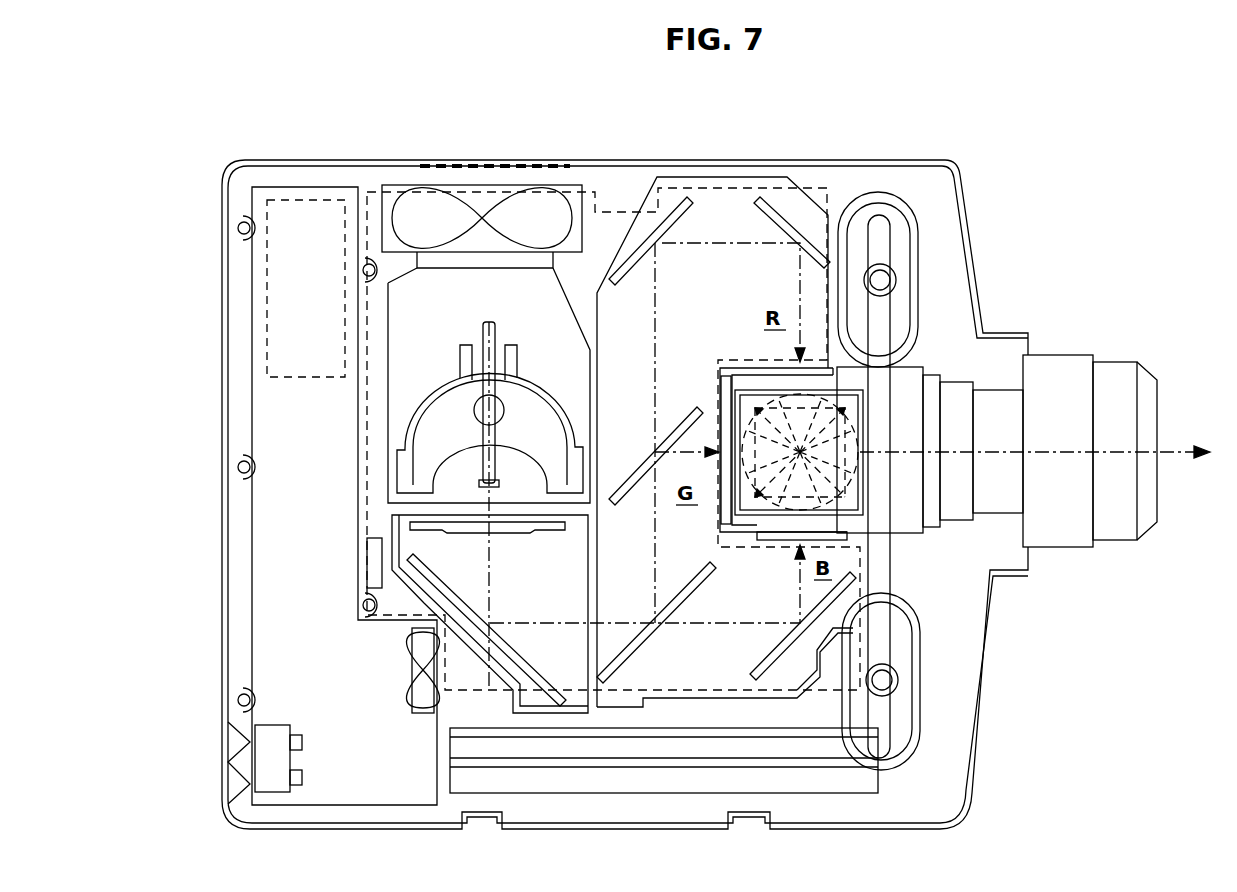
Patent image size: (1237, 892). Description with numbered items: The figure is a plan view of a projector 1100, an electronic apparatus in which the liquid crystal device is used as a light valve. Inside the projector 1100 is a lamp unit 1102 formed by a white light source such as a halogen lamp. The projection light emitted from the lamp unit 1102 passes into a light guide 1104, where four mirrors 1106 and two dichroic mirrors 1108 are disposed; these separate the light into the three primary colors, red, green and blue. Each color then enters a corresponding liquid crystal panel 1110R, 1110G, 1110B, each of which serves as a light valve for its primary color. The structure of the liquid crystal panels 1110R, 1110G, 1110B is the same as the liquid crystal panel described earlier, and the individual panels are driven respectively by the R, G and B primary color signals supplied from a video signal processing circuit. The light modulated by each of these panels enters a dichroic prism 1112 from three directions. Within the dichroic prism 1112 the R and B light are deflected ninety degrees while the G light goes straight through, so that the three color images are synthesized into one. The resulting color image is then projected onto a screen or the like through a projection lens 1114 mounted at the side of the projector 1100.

The projector 1100 is at (975, 162).
The lamp unit 1102 is at (538, 305).
The light guide 1104 is at (660, 185).
The mirrors 1106 is at (777, 222).
The dichroic mirrors 1108 is at (684, 588).
The liquid crystal panel 1110R is at (768, 366).
The liquid crystal panel 1110G is at (724, 420).
The liquid crystal panel 1110B is at (760, 541).
The dichroic prism 1112 is at (926, 530).
The projection lens 1114 is at (1126, 368).